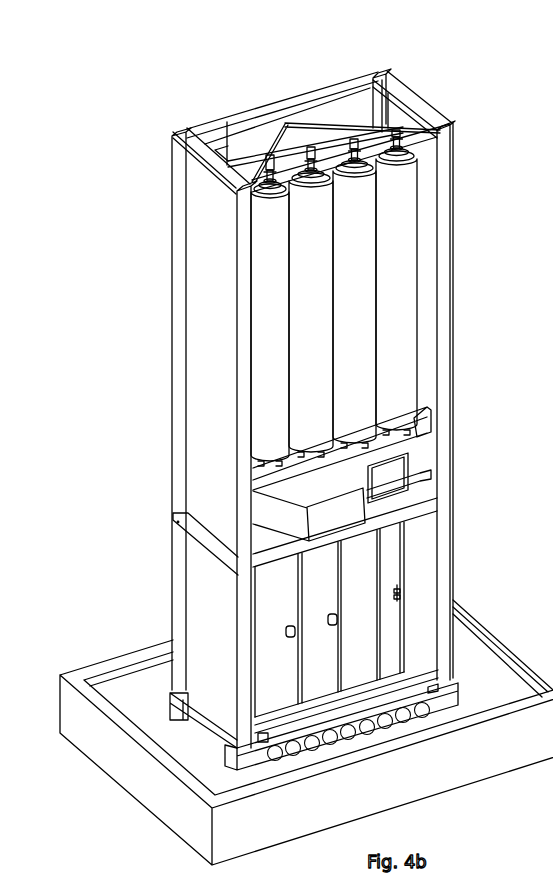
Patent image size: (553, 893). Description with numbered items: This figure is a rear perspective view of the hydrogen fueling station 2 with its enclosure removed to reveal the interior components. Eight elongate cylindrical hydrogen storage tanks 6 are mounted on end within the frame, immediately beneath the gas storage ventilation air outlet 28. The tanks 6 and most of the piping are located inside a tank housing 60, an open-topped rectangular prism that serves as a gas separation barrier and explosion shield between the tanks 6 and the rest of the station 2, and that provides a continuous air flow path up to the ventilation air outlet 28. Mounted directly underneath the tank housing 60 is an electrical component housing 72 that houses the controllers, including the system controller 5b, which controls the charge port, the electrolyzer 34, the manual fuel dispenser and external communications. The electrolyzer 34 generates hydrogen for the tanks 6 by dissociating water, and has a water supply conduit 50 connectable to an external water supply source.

The hydrogen fueling station 2 is at (118, 112).
The ventilation air outlet 28 is at (301, 131).
The hydrogen storage tank 6 is at (426, 286).
The tank housing 60 is at (395, 292).
The system controller 5b is at (393, 482).
The electrical component housing 72 is at (320, 530).
The electrolyzer 34 is at (390, 567).
The water supply conduit 50 is at (400, 595).